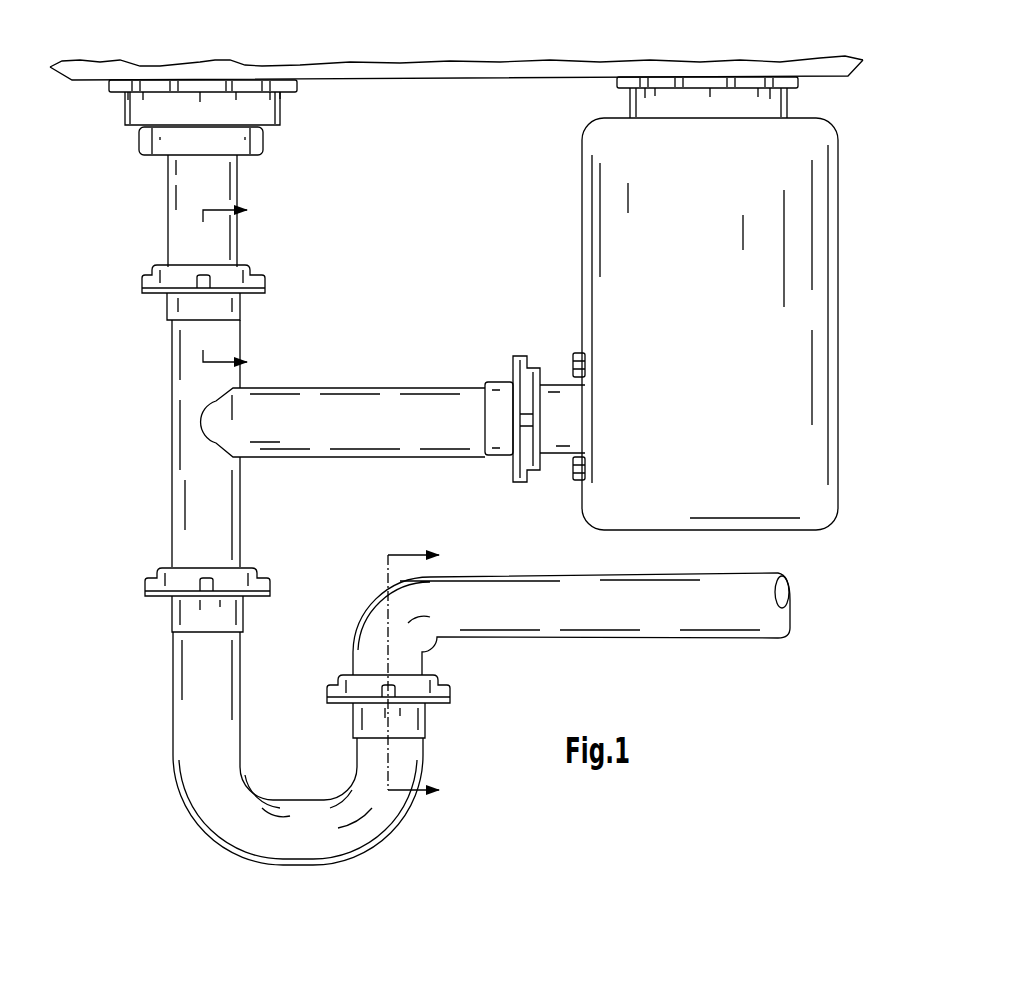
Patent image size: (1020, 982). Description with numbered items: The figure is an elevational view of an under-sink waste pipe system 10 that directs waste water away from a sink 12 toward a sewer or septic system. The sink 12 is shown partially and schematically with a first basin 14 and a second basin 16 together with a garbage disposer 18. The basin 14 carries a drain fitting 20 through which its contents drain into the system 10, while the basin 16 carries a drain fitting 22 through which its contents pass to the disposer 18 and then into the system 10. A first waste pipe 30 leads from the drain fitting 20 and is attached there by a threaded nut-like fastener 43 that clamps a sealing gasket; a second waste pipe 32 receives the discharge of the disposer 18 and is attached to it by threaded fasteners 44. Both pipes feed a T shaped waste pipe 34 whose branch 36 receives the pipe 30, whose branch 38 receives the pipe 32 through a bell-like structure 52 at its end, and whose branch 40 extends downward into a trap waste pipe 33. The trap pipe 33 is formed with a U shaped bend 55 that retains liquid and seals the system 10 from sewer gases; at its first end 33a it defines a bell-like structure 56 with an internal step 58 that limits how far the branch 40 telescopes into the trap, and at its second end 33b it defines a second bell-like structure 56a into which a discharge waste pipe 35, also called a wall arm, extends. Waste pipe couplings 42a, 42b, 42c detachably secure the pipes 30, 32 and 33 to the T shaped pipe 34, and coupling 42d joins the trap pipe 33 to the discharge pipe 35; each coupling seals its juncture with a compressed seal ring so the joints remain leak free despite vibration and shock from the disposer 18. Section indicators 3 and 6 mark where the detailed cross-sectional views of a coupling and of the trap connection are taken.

The under-sink waste pipe system 10 is at (120, 184).
The sink 12 is at (298, 60).
The first basin 14 is at (203, 72).
The second basin 16 is at (697, 70).
The garbage disposer 18 is at (748, 340).
The drain fitting 20 is at (145, 110).
The drain fitting 22 is at (720, 100).
The first waste pipe 30 is at (222, 244).
The second waste pipe 32 is at (548, 392).
The trap waste pipe 33 is at (265, 773).
The first end of trap pipe 33a is at (225, 613).
The second end of trap pipe 33b is at (425, 722).
The T shaped waste pipe 34 is at (191, 385).
The discharge waste pipe 35 is at (602, 617).
The branch 36 is at (172, 340).
The branch 38 is at (364, 422).
The branch 40 is at (212, 503).
The waste pipe coupling 42a is at (138, 279).
The waste pipe coupling 42b is at (527, 367).
The waste pipe coupling 42c is at (133, 585).
The waste pipe coupling 42d is at (460, 681).
The threaded nut-like fastener 43 is at (230, 138).
The threaded fasteners 44 is at (576, 368).
The bell-like structure 52 is at (502, 438).
The U shaped bend 55 is at (306, 817).
The bell-like structure 56 is at (185, 610).
The second bell-like structure 56a is at (407, 728).
The step 58 is at (187, 633).
The section line 3- 3 is at (237, 286).
The section line 6- 6 is at (424, 673).